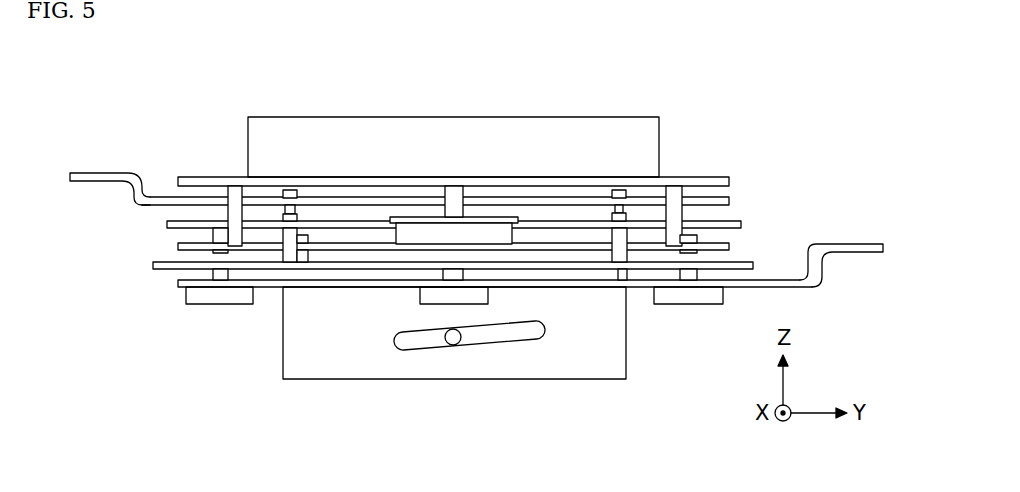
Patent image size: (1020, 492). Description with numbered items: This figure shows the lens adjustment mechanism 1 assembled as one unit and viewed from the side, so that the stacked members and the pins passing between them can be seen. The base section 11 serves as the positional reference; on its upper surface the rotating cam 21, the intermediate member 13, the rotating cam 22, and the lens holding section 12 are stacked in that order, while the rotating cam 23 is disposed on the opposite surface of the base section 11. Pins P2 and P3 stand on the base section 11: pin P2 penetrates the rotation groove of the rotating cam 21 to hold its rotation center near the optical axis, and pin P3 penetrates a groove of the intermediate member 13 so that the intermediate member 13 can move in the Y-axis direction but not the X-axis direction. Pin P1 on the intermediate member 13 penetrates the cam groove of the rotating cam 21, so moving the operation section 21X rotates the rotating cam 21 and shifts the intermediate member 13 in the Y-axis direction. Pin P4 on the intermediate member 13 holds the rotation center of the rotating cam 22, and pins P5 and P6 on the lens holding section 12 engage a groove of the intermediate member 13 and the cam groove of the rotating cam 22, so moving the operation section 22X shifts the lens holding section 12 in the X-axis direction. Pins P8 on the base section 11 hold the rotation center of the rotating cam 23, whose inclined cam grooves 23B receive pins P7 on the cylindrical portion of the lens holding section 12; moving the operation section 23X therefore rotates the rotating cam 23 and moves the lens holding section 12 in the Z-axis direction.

The lens adjustment mechanism 1 is at (485, 248).
The base section 11 is at (752, 265).
The lens holding section 12 is at (650, 148).
The intermediate member 13 is at (732, 220).
The rotating cam 21 is at (720, 246).
The operation section 21X is at (433, 232).
The rotating cam 22 is at (160, 197).
The operation section 22X is at (97, 175).
The rotating cam 23 is at (617, 331).
The cam groove 23B is at (502, 330).
The operation section 23X is at (815, 265).
The pin P1 is at (218, 235).
The pin P2 is at (305, 255).
The pin P3 is at (290, 250).
The pin P4 is at (290, 210).
The pin P5 is at (728, 190).
The pin P6 is at (453, 193).
The pin P7 is at (453, 340).
The pin P8 is at (218, 273).